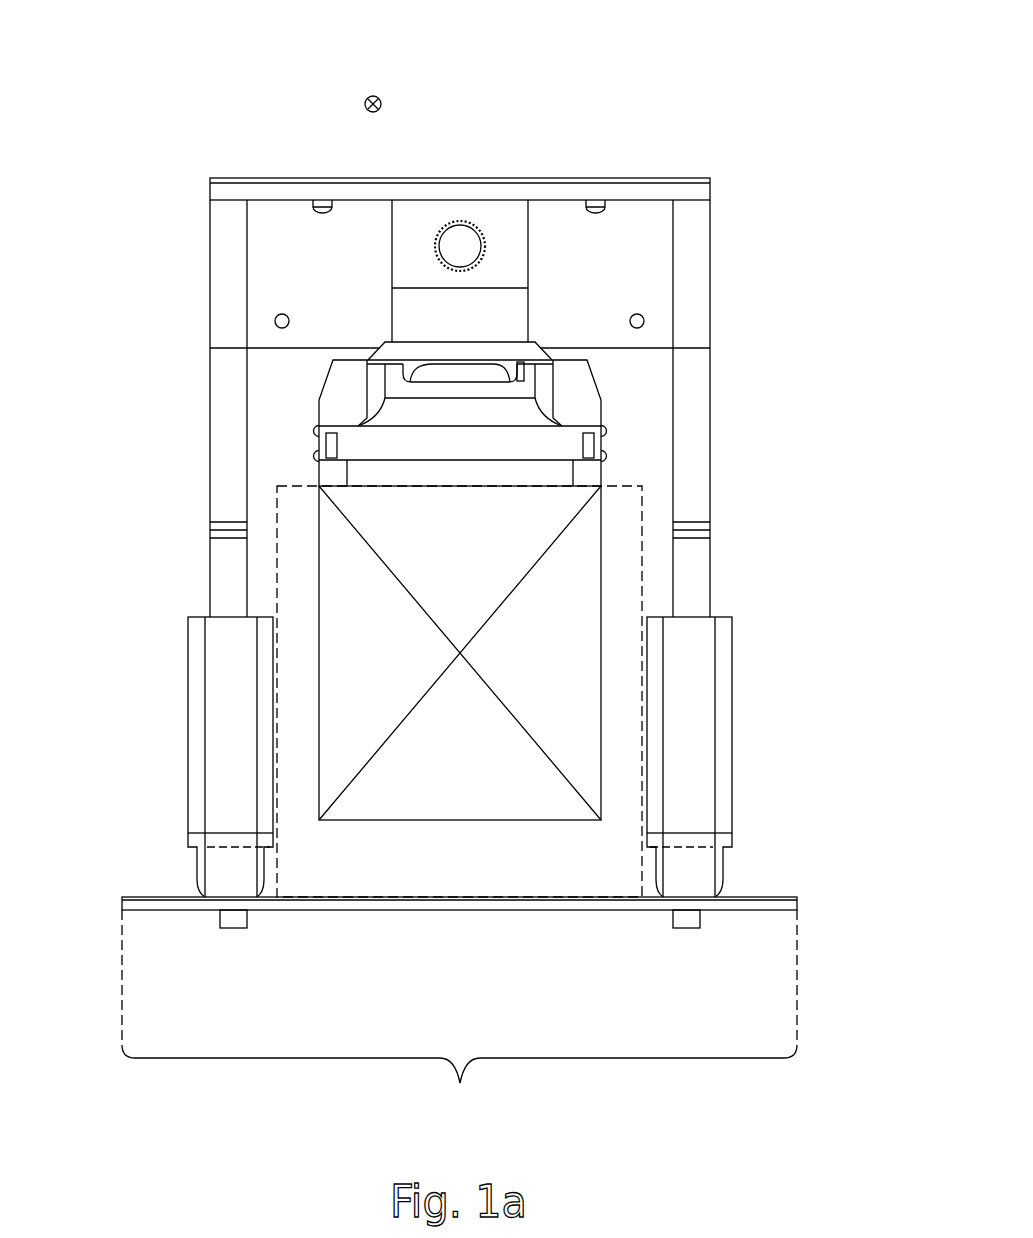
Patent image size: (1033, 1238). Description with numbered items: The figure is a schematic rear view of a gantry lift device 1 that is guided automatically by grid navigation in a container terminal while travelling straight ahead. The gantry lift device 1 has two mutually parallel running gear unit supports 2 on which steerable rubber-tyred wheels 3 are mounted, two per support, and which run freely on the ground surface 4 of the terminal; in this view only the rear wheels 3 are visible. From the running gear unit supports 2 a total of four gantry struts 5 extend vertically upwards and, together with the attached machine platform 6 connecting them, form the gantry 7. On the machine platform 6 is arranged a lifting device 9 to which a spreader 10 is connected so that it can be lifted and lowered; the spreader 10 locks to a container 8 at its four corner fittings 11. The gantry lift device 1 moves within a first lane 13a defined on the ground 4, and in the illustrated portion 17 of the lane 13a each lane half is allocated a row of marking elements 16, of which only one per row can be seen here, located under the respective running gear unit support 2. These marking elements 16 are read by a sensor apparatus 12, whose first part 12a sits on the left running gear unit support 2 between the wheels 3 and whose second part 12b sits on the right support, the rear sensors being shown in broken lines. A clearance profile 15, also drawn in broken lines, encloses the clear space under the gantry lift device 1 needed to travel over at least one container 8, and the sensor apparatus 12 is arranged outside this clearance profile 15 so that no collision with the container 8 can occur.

The gantry lift device 1 is at (466, 561).
The running gear unit support 2 is at (176, 634).
The wheel 3 is at (186, 856).
The ground surface 4 is at (452, 920).
The gantry strut 5 is at (722, 373).
The machine platform 6 is at (563, 190).
The gantry 7 is at (283, 234).
The container 8 is at (560, 650).
The lifting device 9 is at (538, 372).
The spreader 10 is at (554, 415).
The corner fitting 11 is at (612, 474).
The sensor apparatus 12 is at (466, 790).
The first part of the sensor apparatus 12a is at (226, 840).
The second part of the sensor apparatus 12b is at (697, 838).
The first lane 13a is at (459, 1008).
The clearance profile 15 is at (267, 565).
The marking element 16 is at (232, 940).
The portion of the lane 17 is at (459, 1008).